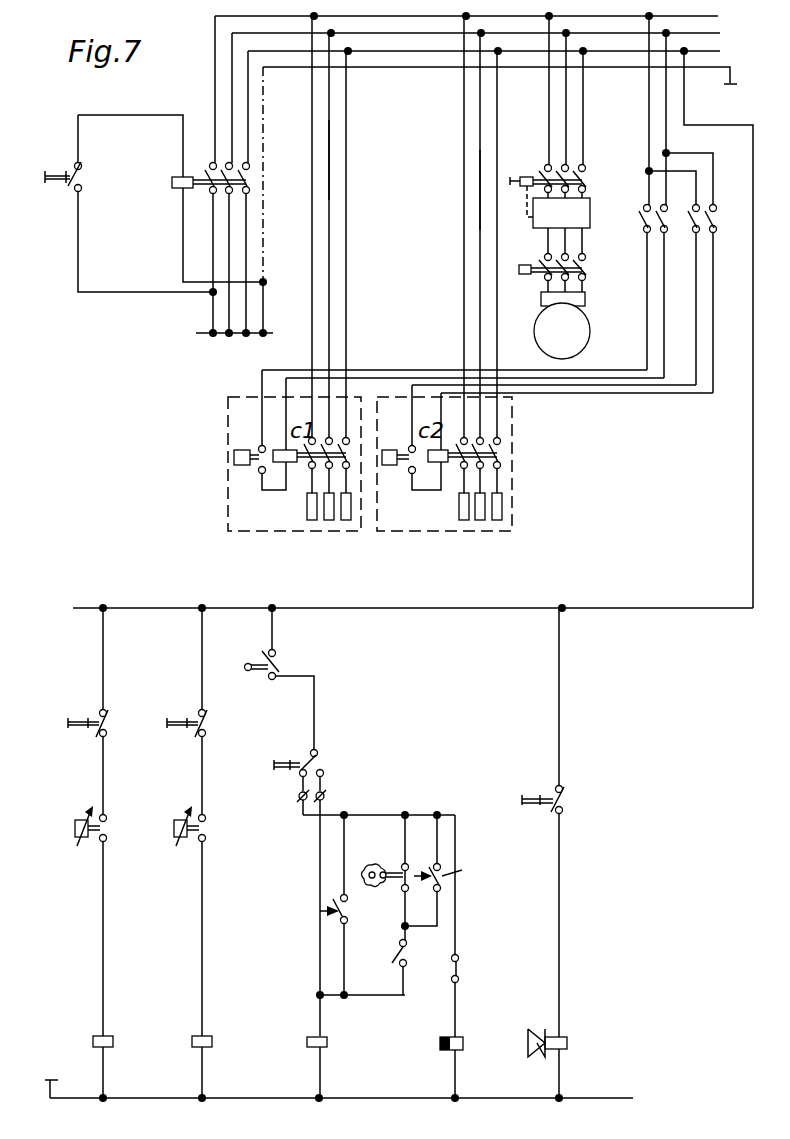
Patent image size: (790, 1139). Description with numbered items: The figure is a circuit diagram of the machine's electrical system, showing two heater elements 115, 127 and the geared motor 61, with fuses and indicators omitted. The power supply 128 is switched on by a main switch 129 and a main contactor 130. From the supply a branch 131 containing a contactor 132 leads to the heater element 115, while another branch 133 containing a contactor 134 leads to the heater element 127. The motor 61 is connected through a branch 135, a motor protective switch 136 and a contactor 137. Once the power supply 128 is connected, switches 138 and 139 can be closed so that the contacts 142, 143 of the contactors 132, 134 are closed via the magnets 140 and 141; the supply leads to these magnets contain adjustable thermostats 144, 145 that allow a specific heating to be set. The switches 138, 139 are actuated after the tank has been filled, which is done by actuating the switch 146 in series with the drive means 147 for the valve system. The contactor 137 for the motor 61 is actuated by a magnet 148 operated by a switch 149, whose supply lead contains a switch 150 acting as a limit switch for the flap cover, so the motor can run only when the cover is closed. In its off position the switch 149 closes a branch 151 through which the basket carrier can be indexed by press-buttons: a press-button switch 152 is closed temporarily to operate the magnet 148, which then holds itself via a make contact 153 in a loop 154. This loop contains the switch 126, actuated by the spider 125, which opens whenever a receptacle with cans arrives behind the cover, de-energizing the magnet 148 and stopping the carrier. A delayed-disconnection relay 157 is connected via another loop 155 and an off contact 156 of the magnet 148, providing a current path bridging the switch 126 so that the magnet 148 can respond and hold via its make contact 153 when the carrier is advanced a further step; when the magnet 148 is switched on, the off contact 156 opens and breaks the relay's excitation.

The geared motor 61 is at (582, 335).
The heater element 115 is at (327, 513).
The spider 125 is at (371, 862).
The switch 126 is at (402, 892).
The heater element 127 is at (477, 513).
The power supply 128 is at (200, 343).
The main switch 129 is at (70, 158).
The main contactor 130 is at (198, 165).
The branch 131 is at (340, 167).
The contactor 132 is at (298, 472).
The branch 133 is at (468, 193).
The contactor 134 is at (447, 472).
The branch 135 is at (578, 122).
The motor protective switch 136 is at (585, 215).
The contactor 137 is at (585, 272).
The switch 138 is at (77, 737).
The switch 139 is at (177, 737).
The magnet 140 is at (92, 1035).
The magnet 141 is at (191, 1035).
The contacts 142 is at (670, 217).
The contacts 143 is at (722, 217).
The adjustable thermostat 144 is at (74, 830).
The adjustable thermostat 145 is at (173, 830).
The switch 146 is at (565, 800).
The drive means 147 is at (569, 1040).
The magnet 148 is at (328, 1040).
The switch 149 is at (312, 750).
The switch 150 is at (280, 668).
The branch 151 is at (333, 838).
The press-button switch 152 is at (338, 913).
The make contact 153 is at (397, 968).
The loop 154 is at (407, 840).
The loop 155 is at (457, 922).
The off contact 156 is at (458, 967).
The delayed-disconnection relay 157 is at (465, 1036).